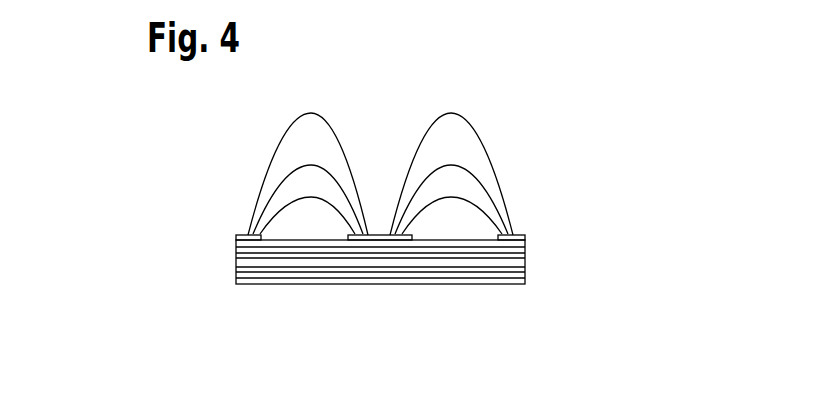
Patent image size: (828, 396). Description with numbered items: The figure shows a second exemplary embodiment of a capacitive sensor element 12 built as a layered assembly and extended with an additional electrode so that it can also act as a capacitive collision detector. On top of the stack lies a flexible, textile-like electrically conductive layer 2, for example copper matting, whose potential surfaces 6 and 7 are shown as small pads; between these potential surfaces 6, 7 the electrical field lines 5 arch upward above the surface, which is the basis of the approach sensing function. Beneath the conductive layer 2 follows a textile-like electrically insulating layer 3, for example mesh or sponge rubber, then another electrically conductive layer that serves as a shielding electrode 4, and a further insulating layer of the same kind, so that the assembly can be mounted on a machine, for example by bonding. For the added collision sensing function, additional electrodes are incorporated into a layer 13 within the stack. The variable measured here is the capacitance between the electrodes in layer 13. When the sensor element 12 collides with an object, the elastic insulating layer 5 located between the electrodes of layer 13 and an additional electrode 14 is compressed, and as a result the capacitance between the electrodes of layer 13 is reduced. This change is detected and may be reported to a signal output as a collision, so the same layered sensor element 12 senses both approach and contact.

The electrically conductive layer 2 is at (236, 238).
The electrically insulating layer 3 is at (242, 245).
The shielding electrode 4 is at (242, 256).
The electrical field lines 5 is at (311, 112).
The potential surface 6 is at (245, 232).
The potential surface 7 is at (385, 232).
The sensor element 12 is at (277, 302).
The layer with additional electrodes 13 is at (520, 273).
The additional electrode 14 is at (520, 264).